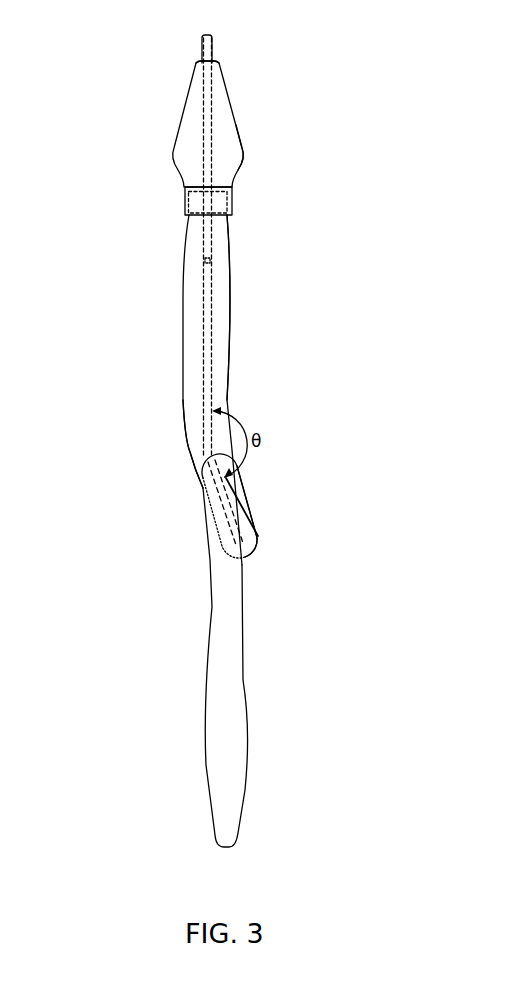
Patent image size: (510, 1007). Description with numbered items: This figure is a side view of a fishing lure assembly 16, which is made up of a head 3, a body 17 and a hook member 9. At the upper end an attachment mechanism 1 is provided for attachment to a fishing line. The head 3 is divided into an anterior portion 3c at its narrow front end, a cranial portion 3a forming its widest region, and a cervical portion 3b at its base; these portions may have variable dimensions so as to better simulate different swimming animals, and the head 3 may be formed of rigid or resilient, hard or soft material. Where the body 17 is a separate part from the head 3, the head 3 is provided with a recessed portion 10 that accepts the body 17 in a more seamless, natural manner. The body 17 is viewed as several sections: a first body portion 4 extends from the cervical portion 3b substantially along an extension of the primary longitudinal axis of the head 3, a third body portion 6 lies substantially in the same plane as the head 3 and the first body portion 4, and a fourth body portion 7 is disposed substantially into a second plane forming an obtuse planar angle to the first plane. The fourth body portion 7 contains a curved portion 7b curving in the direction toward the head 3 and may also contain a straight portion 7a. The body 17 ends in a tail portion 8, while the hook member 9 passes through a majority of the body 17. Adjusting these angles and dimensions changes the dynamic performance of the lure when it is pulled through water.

The attachment mechanism 1 is at (212, 40).
The head 3 is at (241, 103).
The cranial portion 3a is at (241, 134).
The cervical portion 3b is at (233, 193).
The anterior portion 3c is at (195, 65).
The recessed portion 10 is at (189, 206).
The first body portion 4 is at (228, 228).
The third body portion 6 is at (232, 293).
The hook member 9 is at (204, 327).
The fishing lure assembly 16 is at (78, 269).
The body 17 is at (158, 354).
The straight portion 7a is at (191, 452).
The fourth body portion 7 is at (267, 505).
The curved portion 7b is at (257, 549).
The tail portion 8 is at (244, 631).